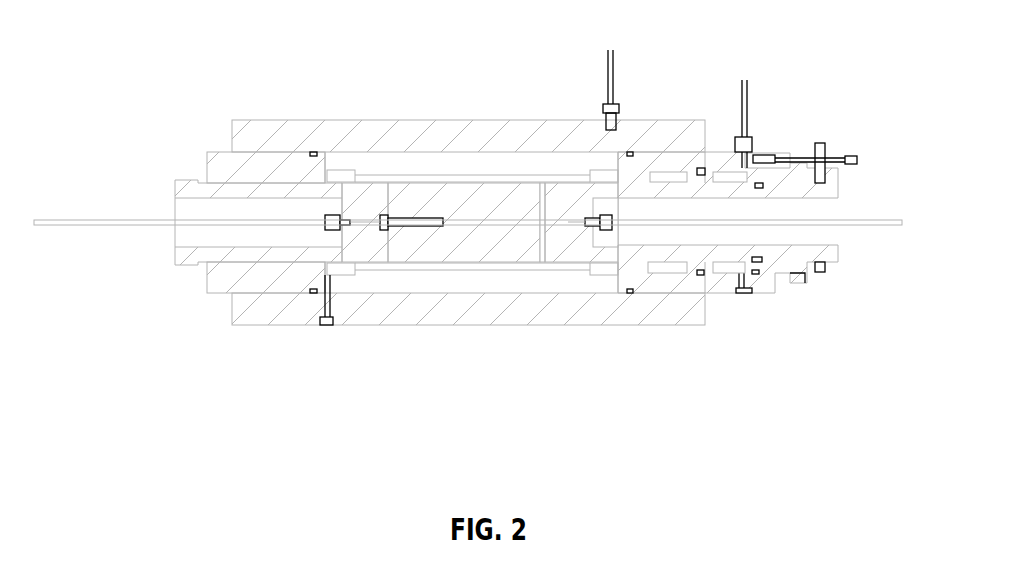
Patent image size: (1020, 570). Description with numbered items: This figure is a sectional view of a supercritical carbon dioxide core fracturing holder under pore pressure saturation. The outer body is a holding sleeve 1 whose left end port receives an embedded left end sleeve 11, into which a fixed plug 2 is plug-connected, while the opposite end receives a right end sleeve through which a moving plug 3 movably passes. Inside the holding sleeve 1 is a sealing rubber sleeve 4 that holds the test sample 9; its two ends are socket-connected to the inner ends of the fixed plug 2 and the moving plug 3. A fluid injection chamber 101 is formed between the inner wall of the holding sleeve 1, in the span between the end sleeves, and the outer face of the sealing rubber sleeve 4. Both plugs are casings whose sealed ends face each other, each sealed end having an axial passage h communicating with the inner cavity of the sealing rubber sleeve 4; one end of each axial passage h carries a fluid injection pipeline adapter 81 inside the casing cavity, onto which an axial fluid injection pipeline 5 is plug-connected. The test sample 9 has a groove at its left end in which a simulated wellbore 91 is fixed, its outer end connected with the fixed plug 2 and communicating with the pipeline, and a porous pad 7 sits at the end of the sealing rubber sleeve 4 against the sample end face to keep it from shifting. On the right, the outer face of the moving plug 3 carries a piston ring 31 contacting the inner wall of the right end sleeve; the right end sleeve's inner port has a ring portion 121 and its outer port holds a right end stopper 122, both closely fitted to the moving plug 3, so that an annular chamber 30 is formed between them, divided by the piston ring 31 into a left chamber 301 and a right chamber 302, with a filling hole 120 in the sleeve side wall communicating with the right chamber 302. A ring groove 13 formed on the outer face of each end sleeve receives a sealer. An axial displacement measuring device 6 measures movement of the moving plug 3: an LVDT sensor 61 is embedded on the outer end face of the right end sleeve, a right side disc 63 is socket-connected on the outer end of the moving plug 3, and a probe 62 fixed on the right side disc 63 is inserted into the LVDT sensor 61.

The holding sleeve 1 is at (280, 125).
The left end sleeve 11 is at (230, 158).
The fixed plug 2 is at (198, 187).
The axial fluid injection pipeline 5 is at (92, 221).
The ring groove 13 is at (313, 152).
The fluid injection chamber 101 is at (420, 163).
The sealing rubber sleeve 4 is at (487, 178).
The porous pad 7 is at (542, 185).
The test sample 9 is at (462, 230).
The fluid injection pipeline adapter 81 is at (332, 228).
The axial passage h is at (368, 223).
The simulated wellbore 91 is at (420, 220).
The moving plug 3 is at (830, 257).
The piston ring 31 is at (693, 170).
The filling hole 120 is at (745, 160).
The ring portion 121 is at (633, 278).
The right end stopper 122 is at (800, 283).
The axial displacement measuring device 6 is at (845, 100).
The LVDT sensor 61 is at (770, 155).
The right side disc 63 is at (820, 143).
The probe 62 is at (840, 157).
The annular chamber 30 is at (717, 310).
The left chamber 301 is at (670, 270).
The right chamber 302 is at (735, 270).